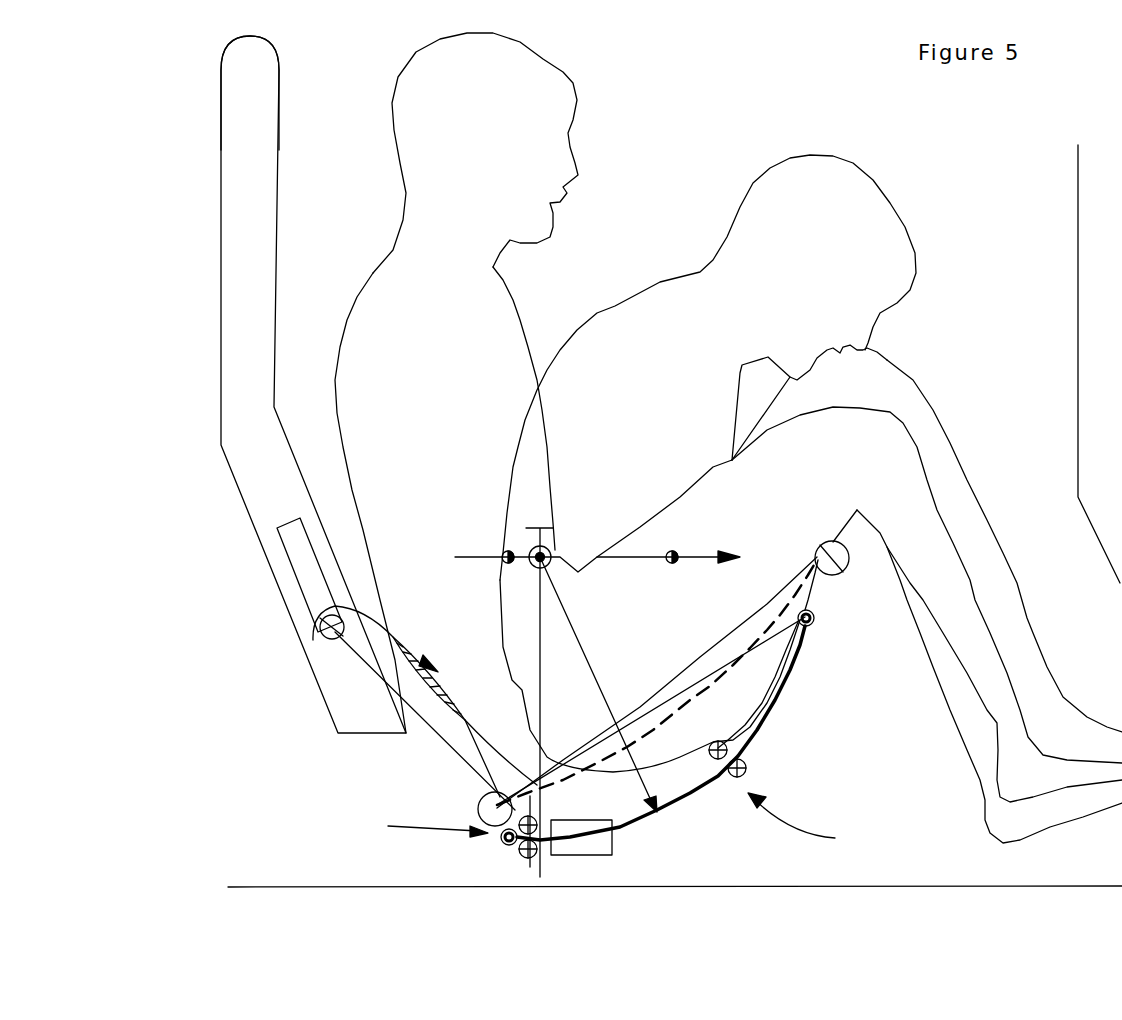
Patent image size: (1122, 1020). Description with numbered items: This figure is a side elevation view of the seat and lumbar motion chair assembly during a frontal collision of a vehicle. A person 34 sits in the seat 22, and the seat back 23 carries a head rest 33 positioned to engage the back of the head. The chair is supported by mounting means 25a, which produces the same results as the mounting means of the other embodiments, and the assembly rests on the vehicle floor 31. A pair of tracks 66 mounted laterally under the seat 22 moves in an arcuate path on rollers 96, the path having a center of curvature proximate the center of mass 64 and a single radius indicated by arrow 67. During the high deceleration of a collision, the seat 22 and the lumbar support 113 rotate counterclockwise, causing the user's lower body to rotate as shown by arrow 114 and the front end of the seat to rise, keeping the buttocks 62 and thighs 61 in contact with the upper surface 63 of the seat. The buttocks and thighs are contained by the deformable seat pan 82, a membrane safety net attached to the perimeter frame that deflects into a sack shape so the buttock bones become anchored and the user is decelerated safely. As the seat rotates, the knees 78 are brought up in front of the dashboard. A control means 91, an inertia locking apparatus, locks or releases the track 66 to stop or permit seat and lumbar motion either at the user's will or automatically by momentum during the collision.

The seat 22 is at (713, 663).
The seat back 23 is at (247, 331).
The mounting means 25a is at (610, 824).
The floor 31 is at (893, 887).
The head rest 33 is at (262, 99).
The person 34 is at (602, 342).
The thighs 61 is at (668, 530).
The buttocks 62 is at (568, 770).
The upper surface of the seat 63 is at (633, 730).
The center of mass 64 is at (550, 548).
The tracks 66 is at (697, 787).
The arrow 67 is at (587, 663).
The knees 78 is at (890, 412).
The deformable seat pan / membrane safety net 82 is at (720, 714).
The control means 91 is at (597, 847).
The rollers 96 is at (748, 768).
The lumbar support 113 is at (435, 732).
The arrow 114 is at (415, 645).